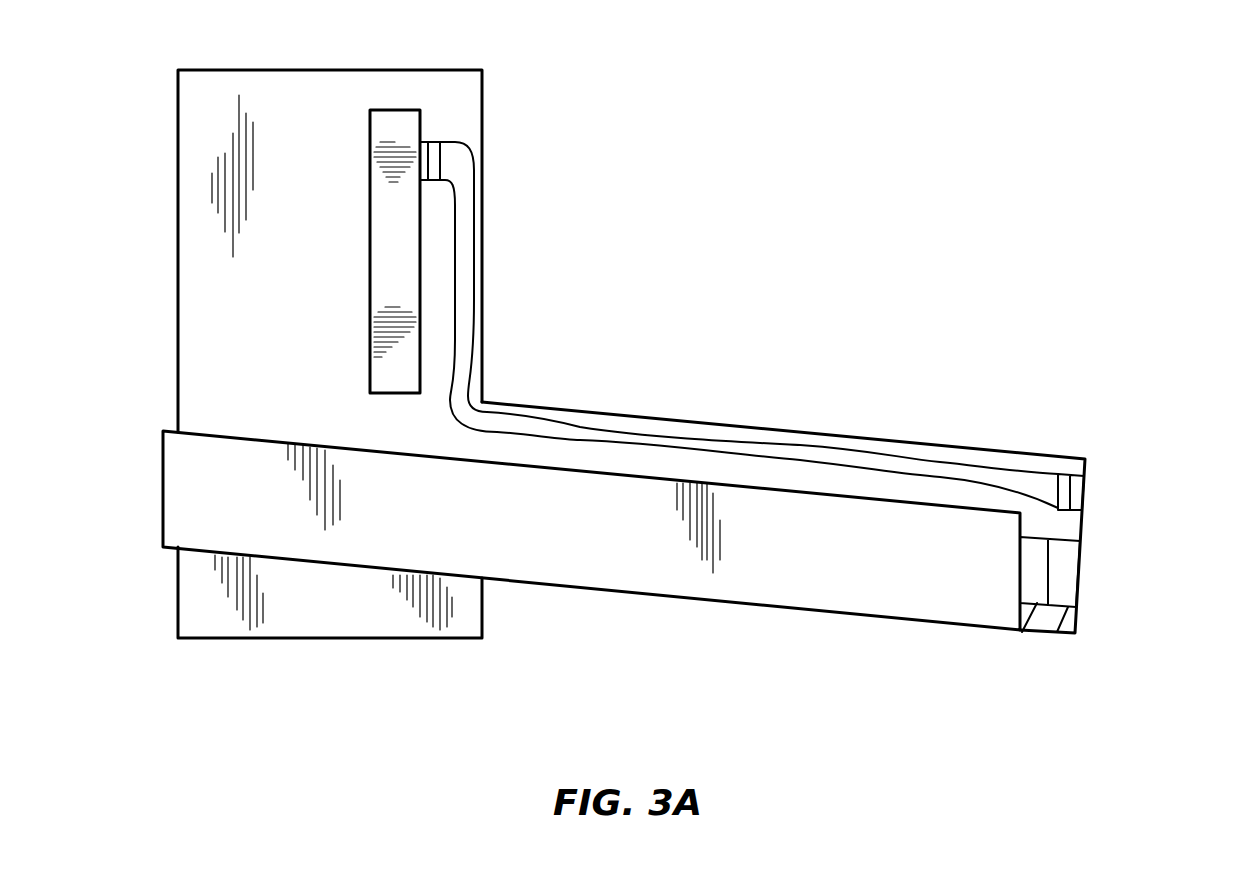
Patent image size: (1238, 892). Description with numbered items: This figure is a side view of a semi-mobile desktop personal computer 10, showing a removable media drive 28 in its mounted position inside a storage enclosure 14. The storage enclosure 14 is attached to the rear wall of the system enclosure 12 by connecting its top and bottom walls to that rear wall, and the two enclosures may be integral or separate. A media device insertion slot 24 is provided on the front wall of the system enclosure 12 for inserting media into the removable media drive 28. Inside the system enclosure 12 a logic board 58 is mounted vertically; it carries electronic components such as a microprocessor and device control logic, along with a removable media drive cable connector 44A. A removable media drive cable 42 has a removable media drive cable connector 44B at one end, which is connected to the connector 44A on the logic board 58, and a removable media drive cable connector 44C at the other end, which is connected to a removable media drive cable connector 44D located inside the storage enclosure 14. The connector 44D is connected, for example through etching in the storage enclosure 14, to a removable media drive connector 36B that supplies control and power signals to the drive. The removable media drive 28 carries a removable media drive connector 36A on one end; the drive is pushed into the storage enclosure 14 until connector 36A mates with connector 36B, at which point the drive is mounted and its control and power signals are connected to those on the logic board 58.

The semi-mobile desktop personal computer 10 is at (833, 120).
The system enclosure 12 is at (177, 228).
The storage enclosure 14 is at (805, 433).
The media device insertion slot 24 is at (162, 475).
The removable media drive 28 is at (623, 475).
The removable media drive connector 36A is at (1028, 633).
The removable media drive connector 36B is at (1048, 633).
The removable media drive cable 42 is at (475, 252).
The removable media drive cable connector 44A is at (425, 141).
The removable media drive cable connector 44B is at (440, 141).
The removable media drive cable connector 44C is at (1075, 458).
The removable media drive cable connector 44D is at (1083, 522).
The logic board 58 is at (350, 115).